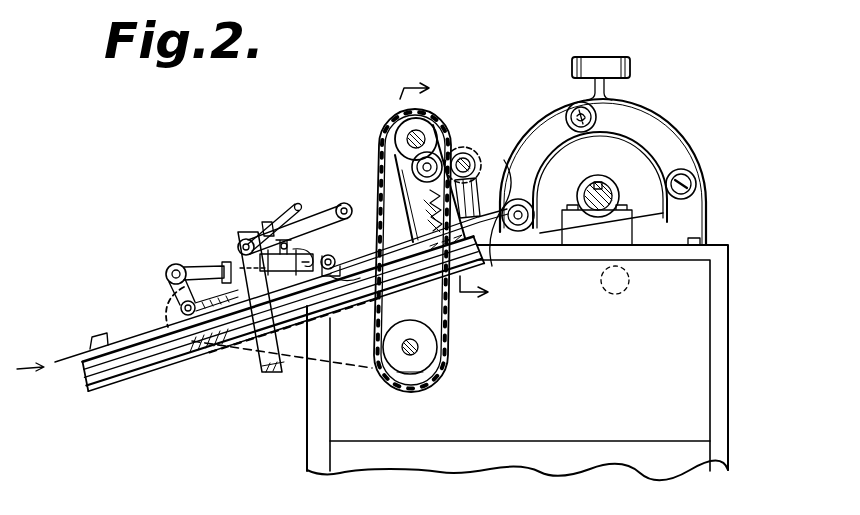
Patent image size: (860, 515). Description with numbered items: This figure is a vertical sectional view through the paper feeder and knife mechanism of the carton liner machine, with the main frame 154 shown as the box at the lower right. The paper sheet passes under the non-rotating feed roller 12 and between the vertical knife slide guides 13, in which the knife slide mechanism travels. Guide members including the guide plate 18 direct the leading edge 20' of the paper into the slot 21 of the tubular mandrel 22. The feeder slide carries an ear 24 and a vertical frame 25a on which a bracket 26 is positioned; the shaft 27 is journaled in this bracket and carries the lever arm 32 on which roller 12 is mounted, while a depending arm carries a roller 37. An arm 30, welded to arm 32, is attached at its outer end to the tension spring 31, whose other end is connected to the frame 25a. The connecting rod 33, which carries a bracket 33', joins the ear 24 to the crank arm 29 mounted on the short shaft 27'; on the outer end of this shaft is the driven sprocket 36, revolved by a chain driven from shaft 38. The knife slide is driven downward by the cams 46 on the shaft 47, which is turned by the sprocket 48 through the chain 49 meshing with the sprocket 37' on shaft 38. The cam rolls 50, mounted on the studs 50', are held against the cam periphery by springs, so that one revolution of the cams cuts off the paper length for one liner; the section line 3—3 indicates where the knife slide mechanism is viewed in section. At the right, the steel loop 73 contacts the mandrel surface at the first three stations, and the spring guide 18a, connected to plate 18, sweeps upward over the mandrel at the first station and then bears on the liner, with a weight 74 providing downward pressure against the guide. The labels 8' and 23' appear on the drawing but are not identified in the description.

The section line 3— 3 is at (454, 192).
The guide rod 8' is at (174, 323).
The non-rotating feed roller 12 is at (351, 204).
The vertical knife slide guides 13 is at (422, 226).
The guide plate 18 is at (496, 203).
The spring guide 18a is at (556, 114).
The leading edge of the paper 20' is at (502, 222).
The slot 21 is at (512, 230).
The tubular mandrel 22 is at (597, 117).
The rail 23' is at (284, 313).
The ear 24 is at (340, 256).
The vertical frame 25a is at (262, 377).
The bracket 26 is at (221, 255).
The shaft 27 is at (239, 302).
The short shaft 27' is at (178, 310).
The crank arm 29 is at (158, 296).
The arm 30 is at (270, 222).
The tension spring 31 is at (296, 203).
The lever arm 32 is at (335, 203).
The connecting rod 33 is at (158, 272).
The bracket 33' is at (231, 232).
The driven sprocket 36 is at (150, 306).
The roller 37 is at (286, 269).
The sprocket 37' is at (447, 375).
The shaft 38 is at (420, 347).
The cams 46 is at (425, 126).
The shaft 47 is at (411, 133).
The sprocket 48 is at (396, 152).
The chain 49 is at (382, 160).
The cam rolls 50 is at (444, 179).
The studs 50' is at (475, 177).
The steel loop 73 is at (547, 171).
The weight 74 is at (632, 71).
The frame 154 is at (722, 258).